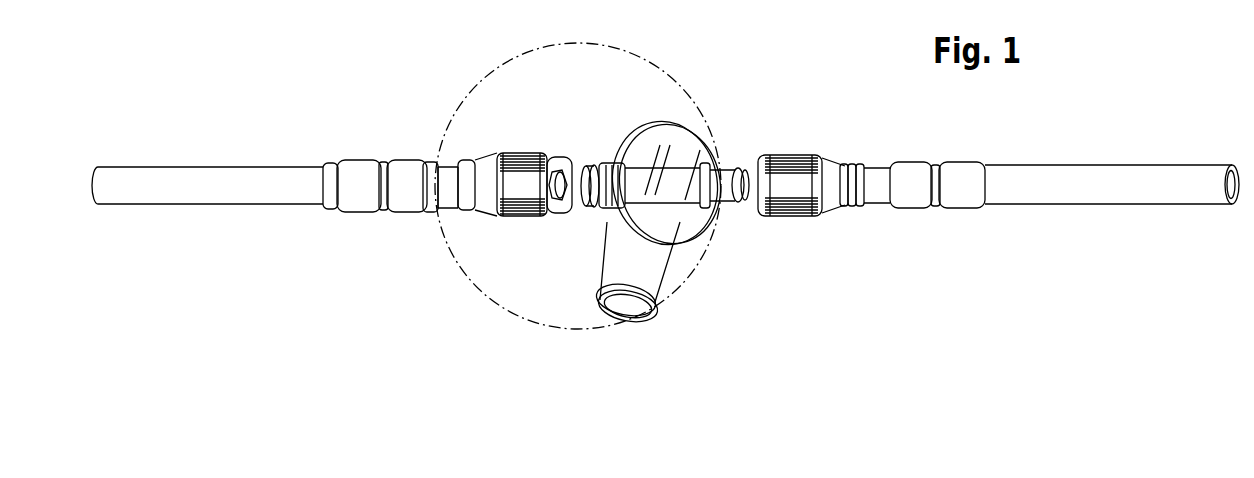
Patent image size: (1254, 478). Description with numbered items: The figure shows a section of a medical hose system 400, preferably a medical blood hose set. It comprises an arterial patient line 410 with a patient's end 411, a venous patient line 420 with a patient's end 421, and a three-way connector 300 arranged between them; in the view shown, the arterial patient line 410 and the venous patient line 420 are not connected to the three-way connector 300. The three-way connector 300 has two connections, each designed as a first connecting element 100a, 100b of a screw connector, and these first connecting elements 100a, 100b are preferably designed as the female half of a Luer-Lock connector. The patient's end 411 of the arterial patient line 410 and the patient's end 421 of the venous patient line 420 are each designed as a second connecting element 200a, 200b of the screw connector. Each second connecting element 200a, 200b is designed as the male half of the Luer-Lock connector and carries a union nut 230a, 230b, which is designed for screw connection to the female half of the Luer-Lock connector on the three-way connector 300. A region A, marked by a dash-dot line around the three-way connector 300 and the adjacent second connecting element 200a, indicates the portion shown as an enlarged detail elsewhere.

The fluid line assembly 400 is at (273, 71).
The arterial patient line 410 is at (248, 192).
The patient's end 411 is at (517, 137).
The venous patient line 420 is at (1104, 165).
The patient's end 421 is at (805, 142).
The first connecting element 100a is at (612, 165).
The first connecting element 100b is at (700, 218).
The second connecting element 200a is at (437, 196).
The second connecting element 200b is at (882, 207).
The union nut 230a is at (522, 217).
The union nut 230b is at (795, 216).
The three-way connector 300 is at (680, 120).
The detail region A is at (523, 52).